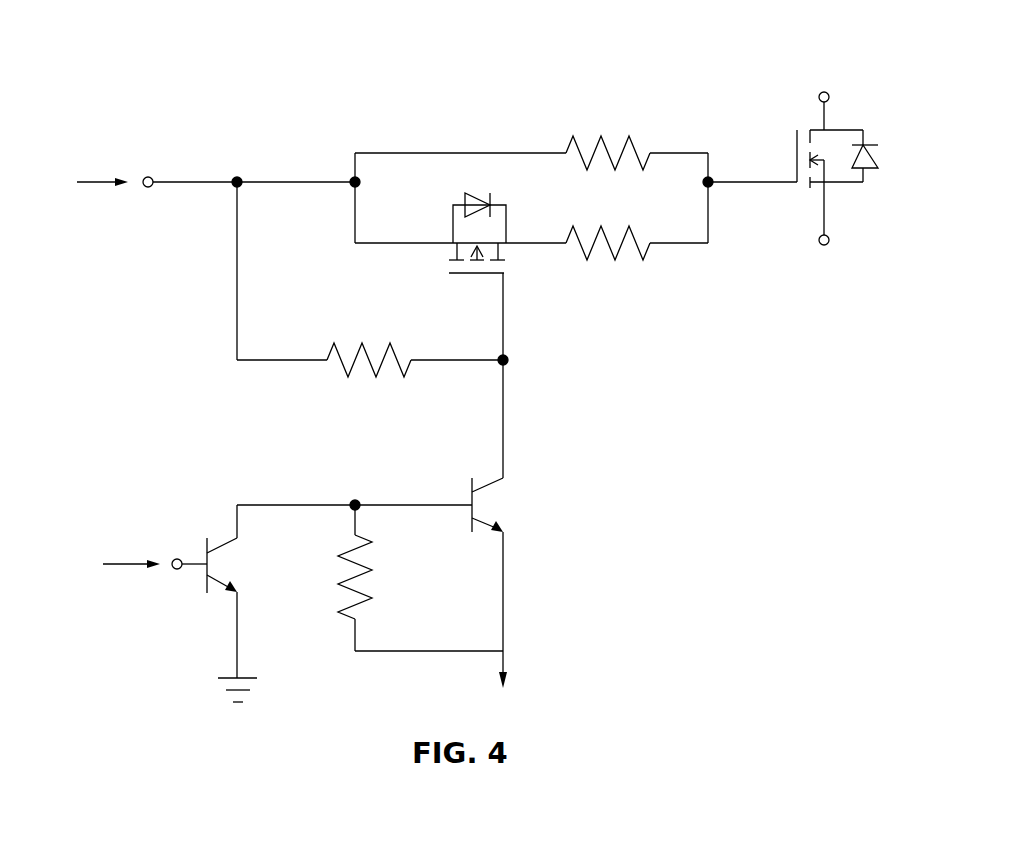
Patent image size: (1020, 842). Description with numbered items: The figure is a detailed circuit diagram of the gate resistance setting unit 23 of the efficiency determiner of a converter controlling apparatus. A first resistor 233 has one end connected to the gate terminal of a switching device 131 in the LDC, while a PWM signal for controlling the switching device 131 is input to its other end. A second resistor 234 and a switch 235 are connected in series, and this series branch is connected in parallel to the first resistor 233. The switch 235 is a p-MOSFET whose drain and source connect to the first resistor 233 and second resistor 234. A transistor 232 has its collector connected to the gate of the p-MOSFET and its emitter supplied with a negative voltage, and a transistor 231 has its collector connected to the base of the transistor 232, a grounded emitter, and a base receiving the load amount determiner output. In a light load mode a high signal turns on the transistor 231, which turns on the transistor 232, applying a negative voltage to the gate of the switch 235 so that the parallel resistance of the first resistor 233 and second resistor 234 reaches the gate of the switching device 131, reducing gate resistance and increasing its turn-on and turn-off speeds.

The gate resistance setting unit 23 is at (409, 94).
The switching device 131 is at (853, 115).
The transistor 231 is at (232, 565).
The transistor 232 is at (496, 505).
The first resistor 233 is at (642, 145).
The second resistor 234 is at (648, 262).
The switch 235 is at (494, 192).